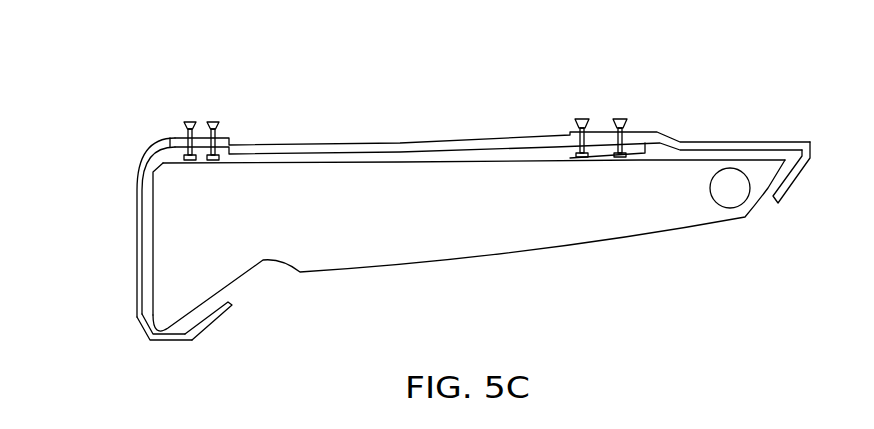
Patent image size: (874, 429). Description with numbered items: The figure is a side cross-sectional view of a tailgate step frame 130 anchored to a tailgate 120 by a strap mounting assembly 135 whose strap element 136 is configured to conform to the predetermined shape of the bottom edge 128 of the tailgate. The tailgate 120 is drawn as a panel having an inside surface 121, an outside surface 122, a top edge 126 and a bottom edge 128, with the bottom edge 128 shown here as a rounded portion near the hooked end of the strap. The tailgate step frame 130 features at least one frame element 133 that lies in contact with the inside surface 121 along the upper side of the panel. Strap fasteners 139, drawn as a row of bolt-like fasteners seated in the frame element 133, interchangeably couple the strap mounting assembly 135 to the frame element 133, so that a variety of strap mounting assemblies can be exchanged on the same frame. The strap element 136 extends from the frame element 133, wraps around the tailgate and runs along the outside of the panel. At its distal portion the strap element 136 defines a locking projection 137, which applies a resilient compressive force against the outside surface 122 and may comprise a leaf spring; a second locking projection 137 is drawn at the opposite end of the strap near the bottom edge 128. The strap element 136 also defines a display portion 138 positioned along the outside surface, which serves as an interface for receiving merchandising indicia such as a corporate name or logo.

The tailgate 120 is at (527, 216).
The inside surface 121 is at (381, 164).
The outside surface 122 is at (300, 271).
The top edge 126 is at (155, 235).
The bottom edge 128 is at (752, 212).
The tailgate step frame 130 is at (385, 85).
The frame element 133 is at (493, 149).
The strap mounting assembly 135 is at (110, 197).
The strap element 136 is at (137, 259).
The locking projection 137 is at (224, 338).
The display portion 138 is at (159, 342).
The strap fasteners 139 is at (216, 121).